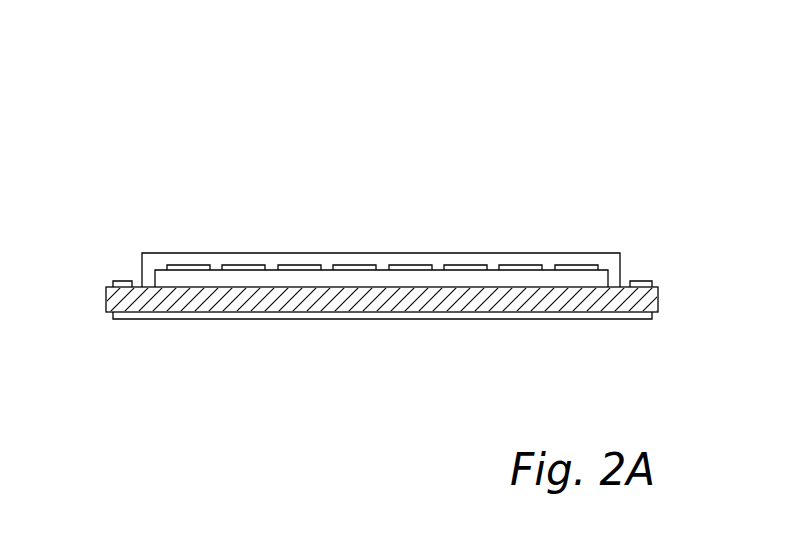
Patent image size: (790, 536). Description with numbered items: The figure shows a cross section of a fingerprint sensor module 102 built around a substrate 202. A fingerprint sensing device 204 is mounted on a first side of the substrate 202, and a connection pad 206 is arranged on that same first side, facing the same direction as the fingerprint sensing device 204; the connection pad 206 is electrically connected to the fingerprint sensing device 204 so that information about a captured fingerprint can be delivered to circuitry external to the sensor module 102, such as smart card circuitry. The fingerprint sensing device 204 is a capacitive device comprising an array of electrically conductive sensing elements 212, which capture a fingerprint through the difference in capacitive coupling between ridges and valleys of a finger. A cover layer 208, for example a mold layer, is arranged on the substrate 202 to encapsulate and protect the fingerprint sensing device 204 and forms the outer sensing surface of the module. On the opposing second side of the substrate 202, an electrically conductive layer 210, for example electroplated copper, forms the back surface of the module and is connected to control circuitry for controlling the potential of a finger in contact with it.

The fingerprint sensor module 102 is at (271, 152).
The substrate 202 is at (612, 302).
The fingerprint sensing device 204 is at (603, 278).
The connection pad 206 is at (122, 280).
The cover layer 208 is at (168, 252).
The electrically conductive layer 210 is at (325, 320).
The sensing elements 212 is at (302, 267).